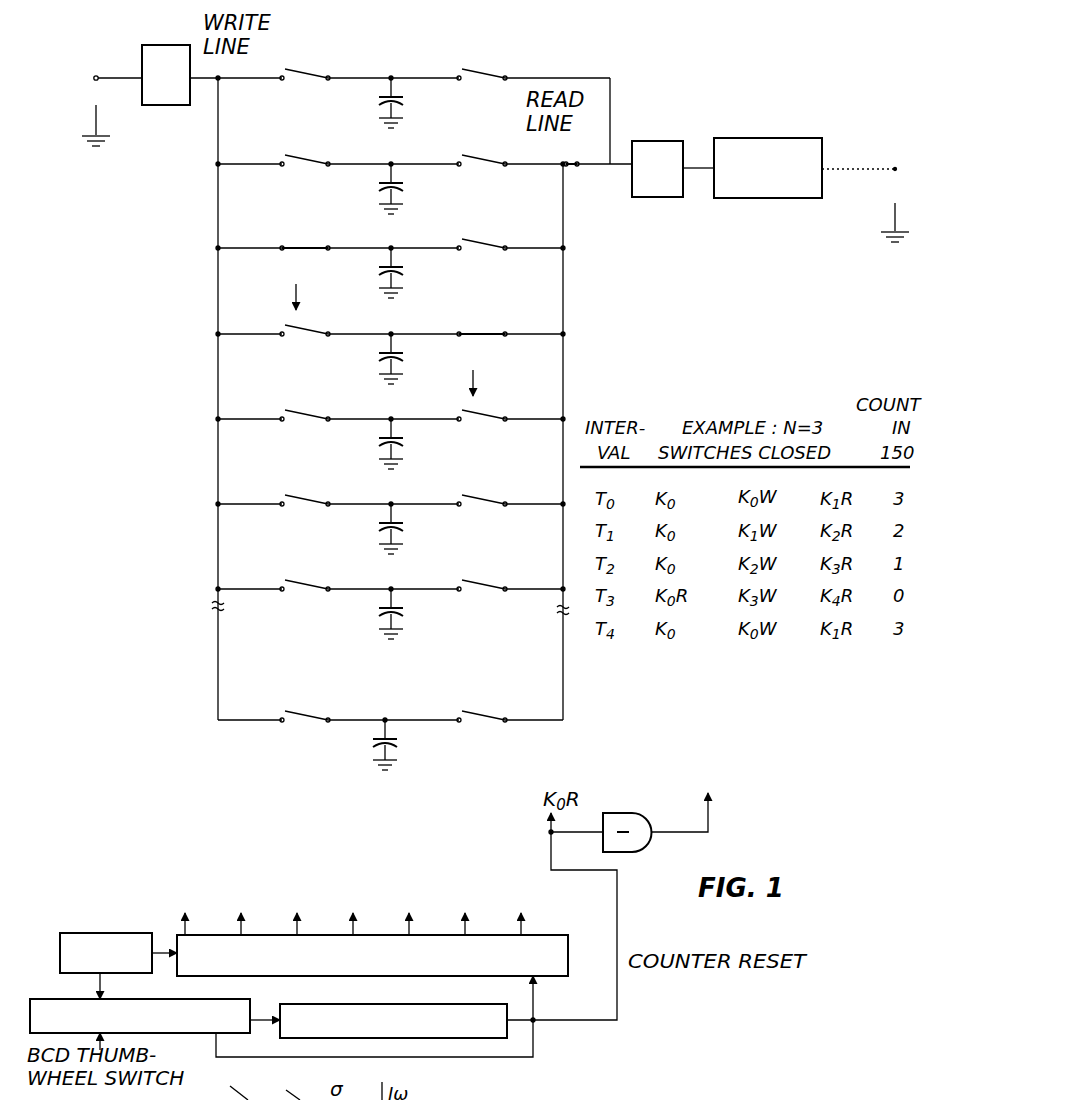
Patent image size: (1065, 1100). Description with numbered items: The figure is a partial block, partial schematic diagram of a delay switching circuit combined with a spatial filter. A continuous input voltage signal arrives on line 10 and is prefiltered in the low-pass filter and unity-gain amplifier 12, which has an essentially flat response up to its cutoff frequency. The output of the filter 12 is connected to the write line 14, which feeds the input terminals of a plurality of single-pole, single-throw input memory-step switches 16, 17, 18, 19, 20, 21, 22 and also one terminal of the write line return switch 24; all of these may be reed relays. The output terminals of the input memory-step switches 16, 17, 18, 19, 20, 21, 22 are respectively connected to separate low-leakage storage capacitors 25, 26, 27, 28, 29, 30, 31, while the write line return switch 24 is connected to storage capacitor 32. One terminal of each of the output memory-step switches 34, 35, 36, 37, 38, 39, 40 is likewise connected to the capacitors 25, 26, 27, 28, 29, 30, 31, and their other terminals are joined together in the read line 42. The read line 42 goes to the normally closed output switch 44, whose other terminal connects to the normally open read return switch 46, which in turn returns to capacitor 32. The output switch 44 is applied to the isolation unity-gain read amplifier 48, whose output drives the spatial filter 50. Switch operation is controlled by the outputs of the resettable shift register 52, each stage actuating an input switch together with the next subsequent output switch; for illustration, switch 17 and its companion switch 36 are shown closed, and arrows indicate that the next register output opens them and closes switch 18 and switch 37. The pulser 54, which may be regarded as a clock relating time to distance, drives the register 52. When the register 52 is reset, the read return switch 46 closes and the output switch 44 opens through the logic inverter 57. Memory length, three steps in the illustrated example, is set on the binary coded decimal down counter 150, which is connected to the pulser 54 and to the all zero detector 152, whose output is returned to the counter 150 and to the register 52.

The line 10 is at (112, 72).
The low-pass filter and unity-gain amplifier 12 is at (168, 45).
The write line 14 is at (216, 296).
The input memory-step switch 16 is at (309, 156).
The input memory-step switch 17 is at (309, 240).
The input memory-step switch 18 is at (309, 326).
The input memory-step switch 19 is at (309, 411).
The input memory-step switch 20 is at (309, 496).
The input memory-step switch 21 is at (309, 581).
The input memory-step switch 22 is at (309, 712).
The write line return switch 24 is at (309, 70).
The storage capacitor 25 is at (378, 190).
The storage capacitor 26 is at (378, 274).
The storage capacitor 27 is at (378, 360).
The storage capacitor 28 is at (378, 445).
The storage capacitor 29 is at (378, 530).
The storage capacitor 30 is at (378, 615).
The storage capacitor 31 is at (372, 746).
The storage capacitor 32 is at (378, 104).
The output memory-step switch 34 is at (486, 156).
The output memory-step switch 35 is at (486, 240).
The output memory-step switch 36 is at (486, 326).
The output memory-step switch 37 is at (486, 411).
The output memory-step switch 38 is at (486, 496).
The output memory-step switch 39 is at (486, 581).
The output memory-step switch 40 is at (486, 712).
The read line 42 is at (566, 312).
The output switch 44 is at (597, 160).
The read return switch 46 is at (486, 70).
The read amplifier 48 is at (666, 141).
The spatial filter 50 is at (780, 138).
The resettable shift register 52 is at (553, 976).
The pulser 54 is at (91, 933).
The logic inverter 57 is at (644, 852).
The binary coded decimal down counter 150 is at (186, 1000).
The all zero detector 152 is at (406, 1006).